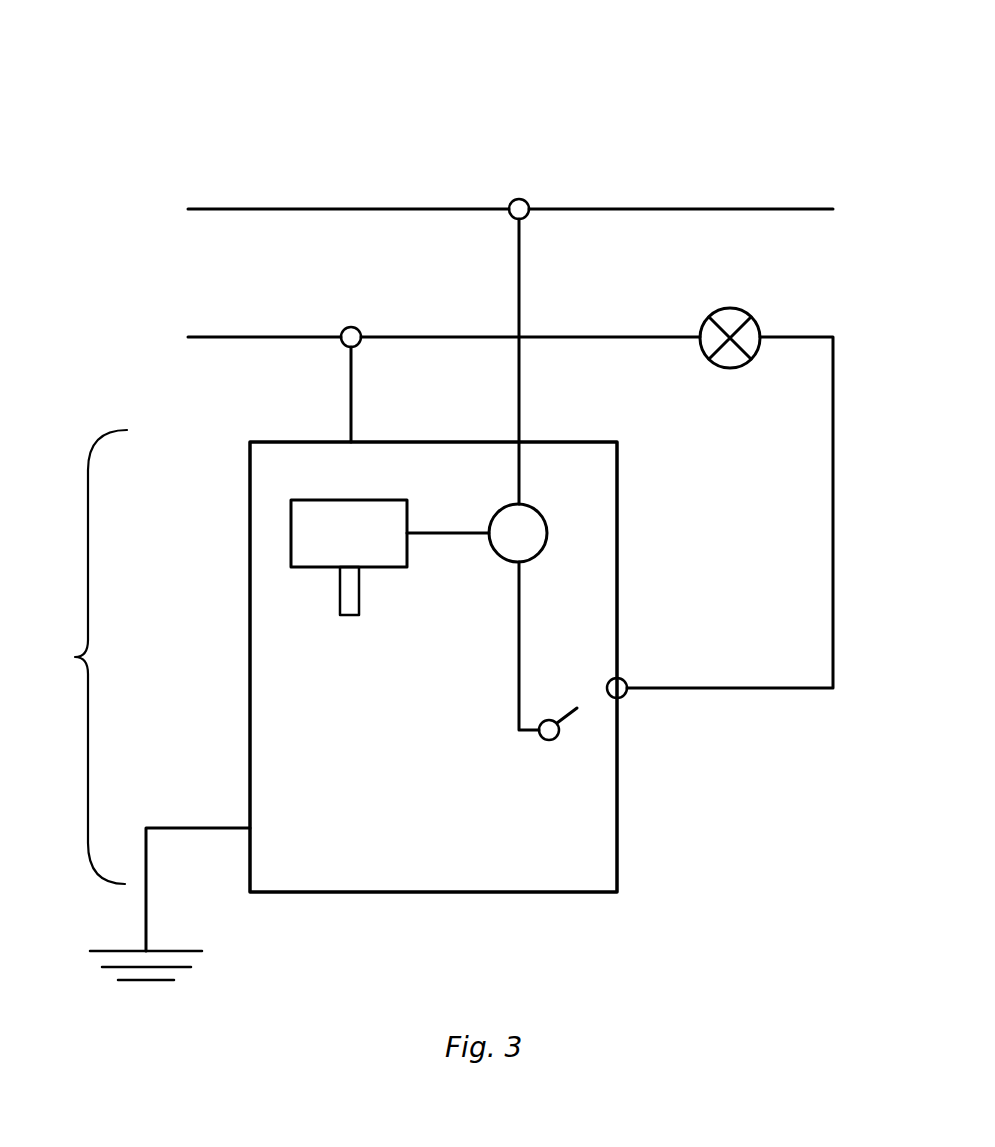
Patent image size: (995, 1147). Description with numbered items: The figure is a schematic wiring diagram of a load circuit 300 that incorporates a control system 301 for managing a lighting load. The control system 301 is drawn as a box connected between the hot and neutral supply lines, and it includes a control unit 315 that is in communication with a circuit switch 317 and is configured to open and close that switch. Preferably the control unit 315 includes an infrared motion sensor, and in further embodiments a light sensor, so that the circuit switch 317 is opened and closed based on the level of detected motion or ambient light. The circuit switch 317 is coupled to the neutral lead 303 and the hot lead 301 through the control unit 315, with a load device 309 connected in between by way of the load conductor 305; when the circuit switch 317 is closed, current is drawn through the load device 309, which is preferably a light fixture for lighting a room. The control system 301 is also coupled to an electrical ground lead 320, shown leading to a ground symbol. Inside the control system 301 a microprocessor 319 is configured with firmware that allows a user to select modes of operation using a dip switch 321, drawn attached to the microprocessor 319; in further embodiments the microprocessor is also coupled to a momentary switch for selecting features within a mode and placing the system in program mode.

The load circuit 300 is at (138, 102).
The control system 301 is at (678, 208).
The neutral line conductor 303 is at (268, 336).
The load conductor 305 is at (833, 497).
The load device 309 is at (740, 309).
The control unit 315 is at (548, 531).
The circuit switch 317 is at (553, 741).
The microprocessor 319 is at (291, 533).
The electrical ground lead 320 is at (160, 826).
The dip switch 321 is at (348, 617).